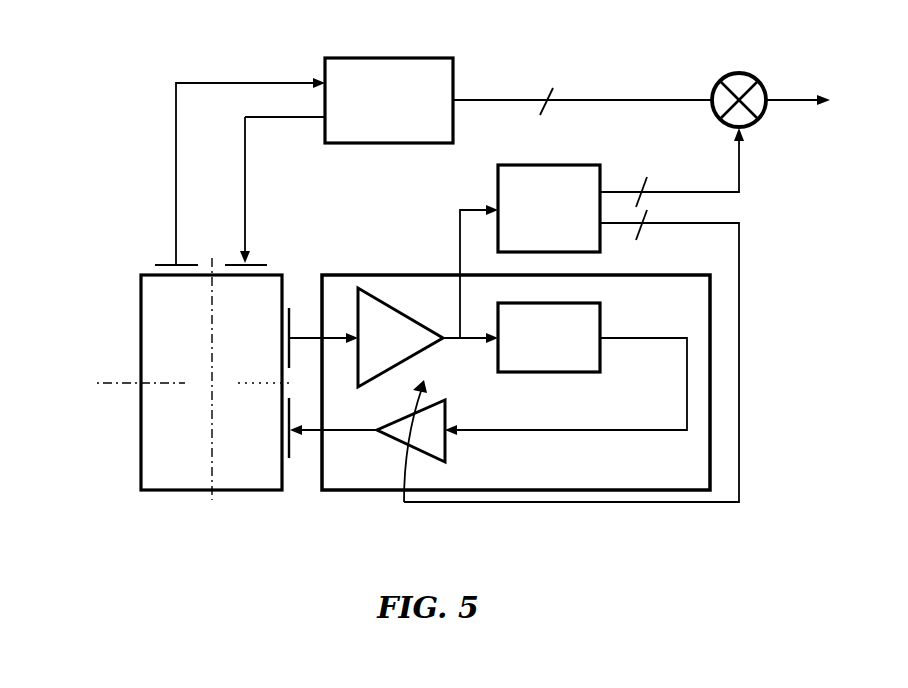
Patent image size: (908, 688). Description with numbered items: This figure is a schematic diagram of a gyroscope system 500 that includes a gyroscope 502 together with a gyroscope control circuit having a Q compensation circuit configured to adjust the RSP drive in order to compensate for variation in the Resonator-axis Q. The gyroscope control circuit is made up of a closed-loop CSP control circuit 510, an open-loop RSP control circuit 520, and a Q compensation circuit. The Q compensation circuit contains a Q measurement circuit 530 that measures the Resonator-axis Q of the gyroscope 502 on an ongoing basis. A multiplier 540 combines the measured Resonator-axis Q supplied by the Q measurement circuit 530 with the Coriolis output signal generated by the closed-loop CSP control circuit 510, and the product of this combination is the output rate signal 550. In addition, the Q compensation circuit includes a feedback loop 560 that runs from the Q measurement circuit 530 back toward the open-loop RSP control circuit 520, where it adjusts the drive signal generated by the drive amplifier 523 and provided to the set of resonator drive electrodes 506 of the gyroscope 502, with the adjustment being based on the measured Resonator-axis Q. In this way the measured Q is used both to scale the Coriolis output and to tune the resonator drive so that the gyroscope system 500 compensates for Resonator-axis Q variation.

The gyroscope system 500 is at (447, 576).
The gyroscope 502 is at (237, 477).
The set of resonator drive electrodes 506 is at (292, 450).
The closed-loop CSP control circuit 510 is at (373, 134).
The open-loop RSP control circuit 520 is at (670, 305).
The drive amplifier 523 is at (445, 412).
The Q measurement circuit 530 is at (565, 243).
The multiplier 540 is at (765, 85).
The output rate signal 550 is at (825, 112).
The feedback loop 560 is at (739, 370).